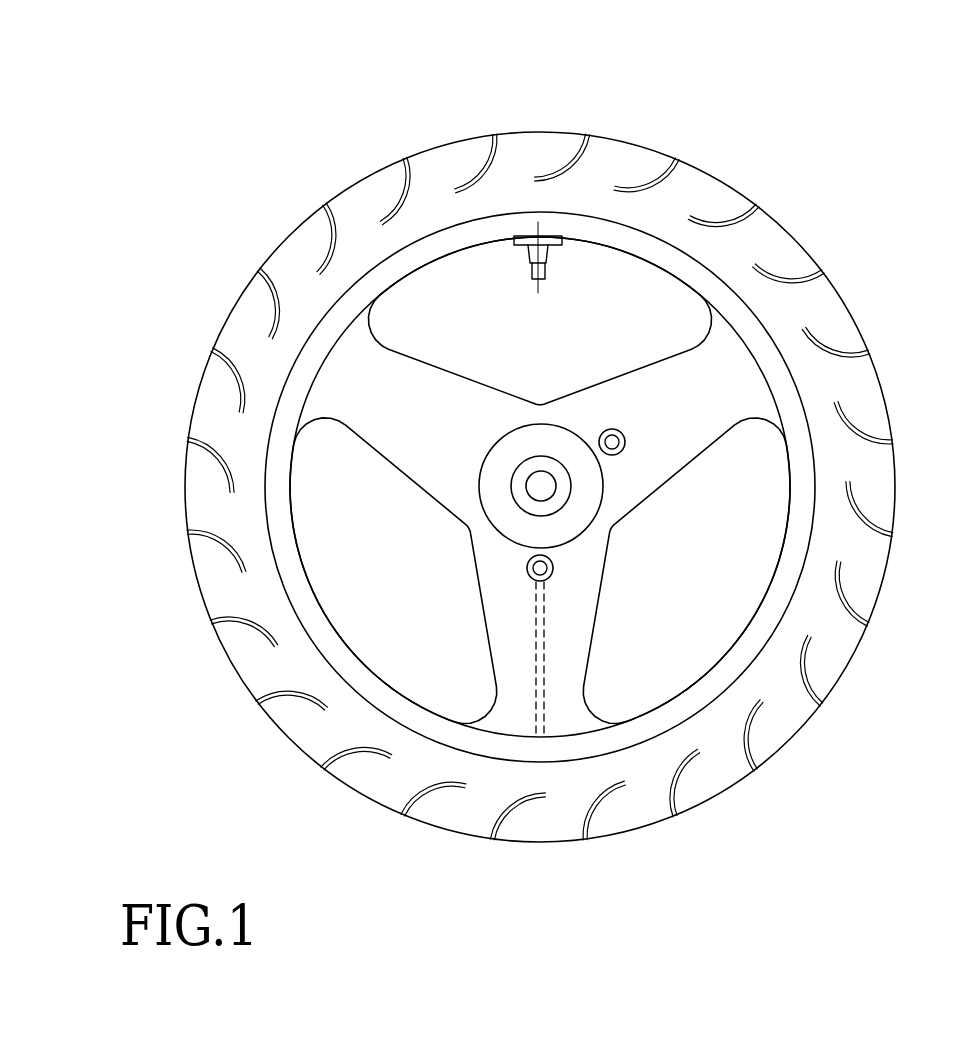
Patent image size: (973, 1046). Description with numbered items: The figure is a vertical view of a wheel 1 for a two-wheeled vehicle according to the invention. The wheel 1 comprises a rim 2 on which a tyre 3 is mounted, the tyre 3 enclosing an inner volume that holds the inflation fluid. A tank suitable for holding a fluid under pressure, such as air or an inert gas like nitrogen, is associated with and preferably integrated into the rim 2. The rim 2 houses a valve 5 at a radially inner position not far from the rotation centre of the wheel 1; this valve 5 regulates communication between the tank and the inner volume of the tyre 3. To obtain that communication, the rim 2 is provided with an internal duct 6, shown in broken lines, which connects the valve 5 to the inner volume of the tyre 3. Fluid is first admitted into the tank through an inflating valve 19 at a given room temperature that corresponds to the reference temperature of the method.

The wheel 1 is at (183, 177).
The rim 2 is at (797, 528).
The tyre 3 is at (852, 310).
The valve 5 is at (553, 569).
The internal duct 6 is at (545, 697).
The inflating valve 19 is at (612, 429).